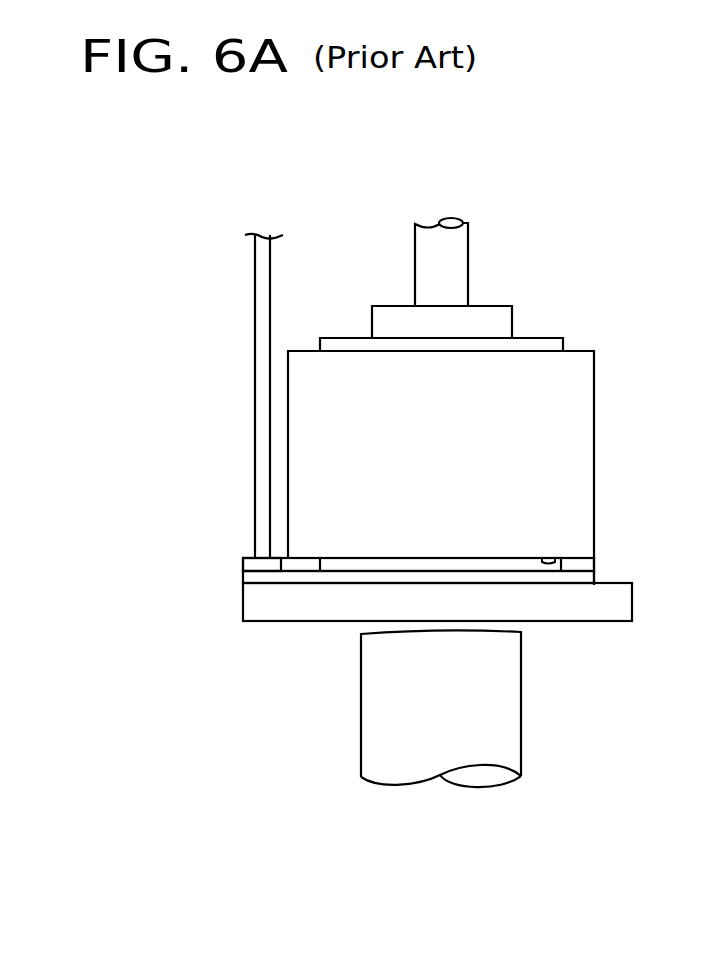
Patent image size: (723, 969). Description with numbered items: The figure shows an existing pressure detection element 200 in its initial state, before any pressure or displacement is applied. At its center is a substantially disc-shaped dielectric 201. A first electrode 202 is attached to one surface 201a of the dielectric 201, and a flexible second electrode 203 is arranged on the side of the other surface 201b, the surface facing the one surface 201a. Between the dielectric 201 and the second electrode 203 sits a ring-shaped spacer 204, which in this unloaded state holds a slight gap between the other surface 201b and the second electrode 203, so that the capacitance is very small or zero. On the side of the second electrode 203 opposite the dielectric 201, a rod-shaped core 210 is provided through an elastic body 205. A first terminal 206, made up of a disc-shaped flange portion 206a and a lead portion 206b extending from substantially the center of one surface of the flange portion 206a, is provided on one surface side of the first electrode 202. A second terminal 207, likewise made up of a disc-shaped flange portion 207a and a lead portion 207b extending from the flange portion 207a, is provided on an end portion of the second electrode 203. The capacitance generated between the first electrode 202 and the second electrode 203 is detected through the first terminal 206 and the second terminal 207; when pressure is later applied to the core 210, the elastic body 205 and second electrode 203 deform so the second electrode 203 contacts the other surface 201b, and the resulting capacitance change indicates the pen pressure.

The pressure detection element 200 is at (297, 192).
The dielectric 201 is at (597, 433).
The one surface 201a is at (588, 347).
The other surface 201b is at (555, 553).
The first electrode 202 is at (548, 337).
The second electrode 203 is at (243, 578).
The spacer 204 is at (585, 566).
The elastic body 205 is at (265, 613).
The first terminal 206 is at (597, 162).
The flange portion 206a is at (488, 304).
The lead portion 206b is at (450, 237).
The second terminal 207 is at (122, 320).
The flange portion 207a is at (240, 558).
The lead portion 207b is at (260, 337).
The core 210 is at (521, 676).